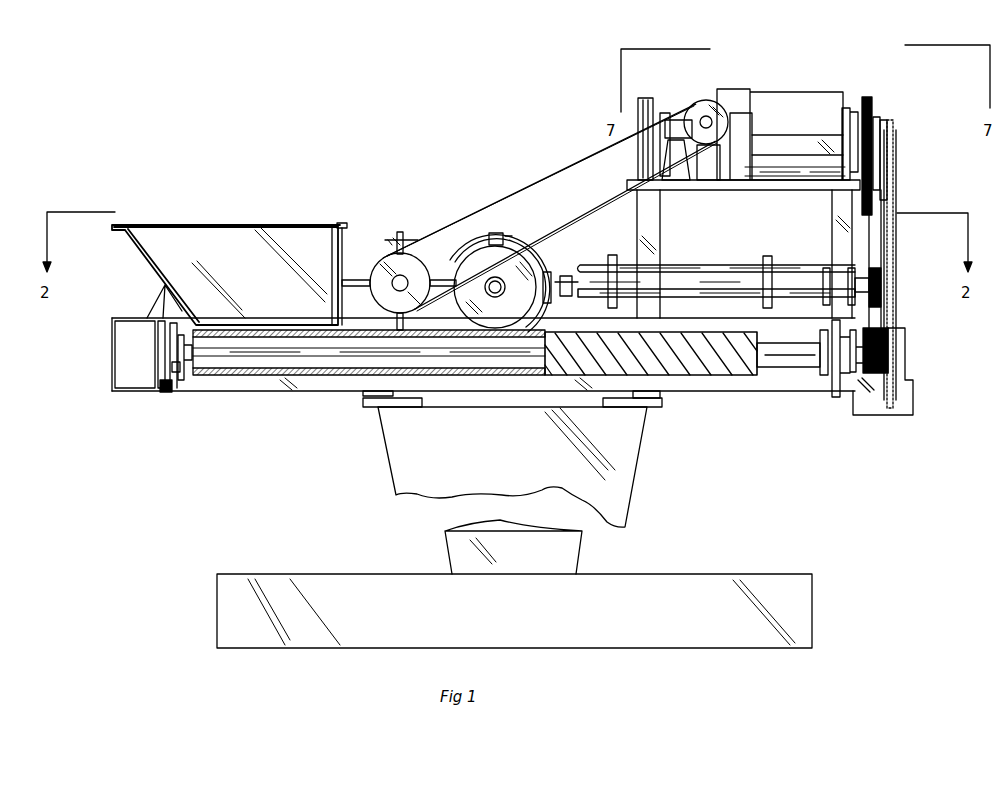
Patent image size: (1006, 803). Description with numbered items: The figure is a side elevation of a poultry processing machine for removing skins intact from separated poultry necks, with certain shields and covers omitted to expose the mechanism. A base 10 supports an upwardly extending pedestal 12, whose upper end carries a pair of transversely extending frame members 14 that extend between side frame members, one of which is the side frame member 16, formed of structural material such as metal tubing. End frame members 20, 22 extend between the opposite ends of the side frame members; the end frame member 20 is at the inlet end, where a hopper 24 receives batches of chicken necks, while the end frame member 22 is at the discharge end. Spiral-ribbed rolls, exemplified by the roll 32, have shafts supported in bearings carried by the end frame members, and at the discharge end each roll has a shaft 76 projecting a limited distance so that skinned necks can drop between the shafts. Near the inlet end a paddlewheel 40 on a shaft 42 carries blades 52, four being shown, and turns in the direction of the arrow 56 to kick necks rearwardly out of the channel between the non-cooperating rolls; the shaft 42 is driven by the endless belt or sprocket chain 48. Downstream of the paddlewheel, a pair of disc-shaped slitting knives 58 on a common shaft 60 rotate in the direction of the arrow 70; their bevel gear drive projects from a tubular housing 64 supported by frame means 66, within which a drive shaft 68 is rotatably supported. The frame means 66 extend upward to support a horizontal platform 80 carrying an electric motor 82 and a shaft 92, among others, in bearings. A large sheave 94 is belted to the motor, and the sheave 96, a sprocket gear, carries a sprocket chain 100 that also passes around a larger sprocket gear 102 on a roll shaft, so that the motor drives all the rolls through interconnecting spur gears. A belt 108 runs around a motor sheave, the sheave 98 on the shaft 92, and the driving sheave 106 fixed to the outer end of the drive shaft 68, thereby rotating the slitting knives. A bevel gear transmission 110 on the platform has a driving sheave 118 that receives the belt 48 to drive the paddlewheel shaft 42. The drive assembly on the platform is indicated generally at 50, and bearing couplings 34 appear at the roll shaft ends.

The base 10 is at (606, 576).
The pedestal 12 is at (624, 494).
The transversely extending frame members 14 is at (364, 404).
The side frame member 16 is at (262, 392).
The end frame member 20 is at (136, 394).
The end frame member 22 is at (848, 398).
The hopper 24 is at (318, 226).
The roll 32 is at (742, 377).
The bearing couplings 34 is at (178, 386).
The paddlewheel 40 is at (383, 256).
The shaft 42 is at (388, 293).
The endless belt or sprocket chain 48 is at (562, 166).
The drive assembly 50 is at (778, 68).
The blades 52 is at (392, 232).
The arrow 56 is at (388, 240).
The slitting knives 58 is at (538, 258).
The common shaft 60 is at (504, 292).
The tubular housing 64 is at (690, 282).
The frame means 66 is at (660, 214).
The drive shaft 68 is at (882, 283).
The arrow 70 is at (466, 246).
The shaft 76 is at (780, 344).
The horizontal platform 80 is at (790, 190).
The electric motor 82 is at (820, 76).
The shaft 92 is at (796, 140).
The large sheave 94 is at (880, 120).
The sheave 96 is at (896, 142).
The sheave 98 is at (893, 128).
The sprocket chain 100 is at (890, 258).
The sprocket gear 102 is at (898, 330).
The driving sheave 106 is at (886, 300).
The belt 108 is at (880, 238).
The bevel gear transmission 110 is at (672, 110).
The driving sheave 118 is at (693, 108).